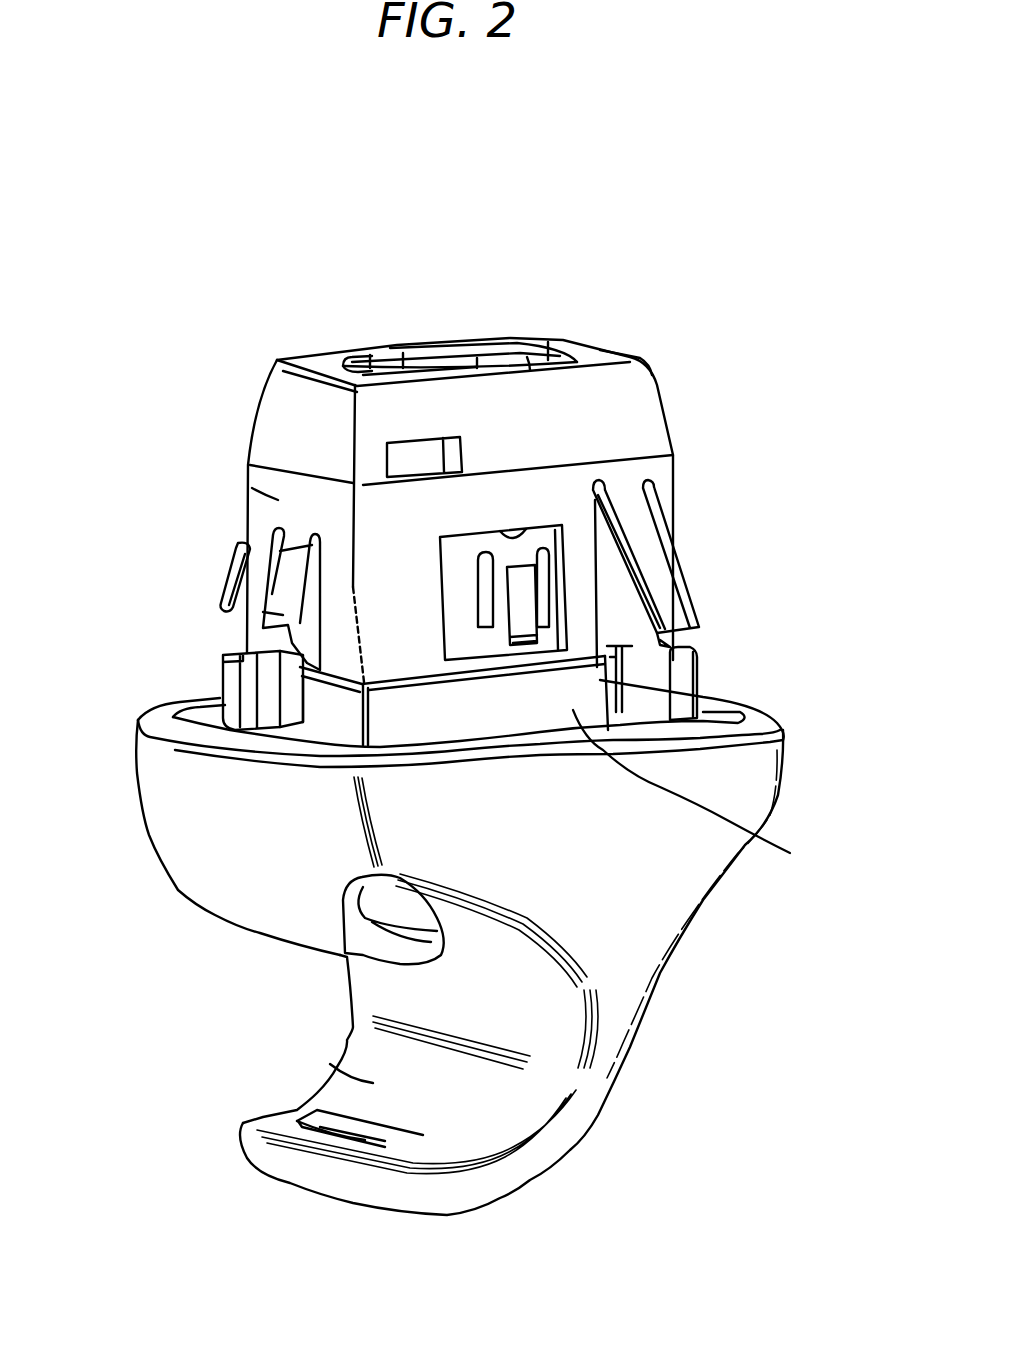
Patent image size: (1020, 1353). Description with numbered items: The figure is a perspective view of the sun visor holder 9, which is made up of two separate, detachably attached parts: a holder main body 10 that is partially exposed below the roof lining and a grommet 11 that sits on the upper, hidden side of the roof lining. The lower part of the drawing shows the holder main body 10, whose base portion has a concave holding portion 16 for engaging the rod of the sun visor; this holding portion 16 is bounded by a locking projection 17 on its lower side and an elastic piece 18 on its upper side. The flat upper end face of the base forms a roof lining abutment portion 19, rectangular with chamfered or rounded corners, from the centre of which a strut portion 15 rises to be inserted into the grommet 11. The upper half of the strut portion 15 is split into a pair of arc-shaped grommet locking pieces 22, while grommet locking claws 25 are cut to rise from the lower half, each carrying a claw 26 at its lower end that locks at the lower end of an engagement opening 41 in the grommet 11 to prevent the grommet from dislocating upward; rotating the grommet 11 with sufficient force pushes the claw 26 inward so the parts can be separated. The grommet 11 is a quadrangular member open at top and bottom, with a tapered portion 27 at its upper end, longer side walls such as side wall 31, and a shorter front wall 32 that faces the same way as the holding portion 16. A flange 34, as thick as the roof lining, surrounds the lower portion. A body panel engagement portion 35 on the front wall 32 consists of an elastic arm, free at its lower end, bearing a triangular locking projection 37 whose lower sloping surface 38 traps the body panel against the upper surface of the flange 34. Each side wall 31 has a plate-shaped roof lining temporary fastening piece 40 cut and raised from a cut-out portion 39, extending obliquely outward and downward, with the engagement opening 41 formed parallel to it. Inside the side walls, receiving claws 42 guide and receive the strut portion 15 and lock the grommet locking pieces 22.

The sun visor holder 9 is at (463, 240).
The holder main body 10 is at (461, 967).
The grommet 11 is at (262, 353).
The strut portion 15 is at (432, 653).
The holding portion 16 is at (330, 1064).
The locking projection 17 is at (347, 1133).
The elastic piece 18 is at (427, 953).
The roof lining abutment portion 19 is at (763, 725).
The grommet locking piece 22 is at (403, 352).
The grommet locking claw 25 is at (520, 622).
The claw 26 is at (527, 655).
The tapered portion 27 is at (640, 388).
The side wall 31 is at (491, 509).
The front wall 32 is at (275, 500).
The flange 34 is at (701, 788).
The body panel engagement portion 35 is at (283, 550).
The locking projection 37 is at (280, 613).
The lower sloping surface 38 is at (230, 657).
The cut-out portion 39 is at (555, 600).
The roof lining temporary fastening piece 40 is at (224, 582).
The engagement opening 41 is at (505, 533).
The receiving claw 42 is at (370, 364).